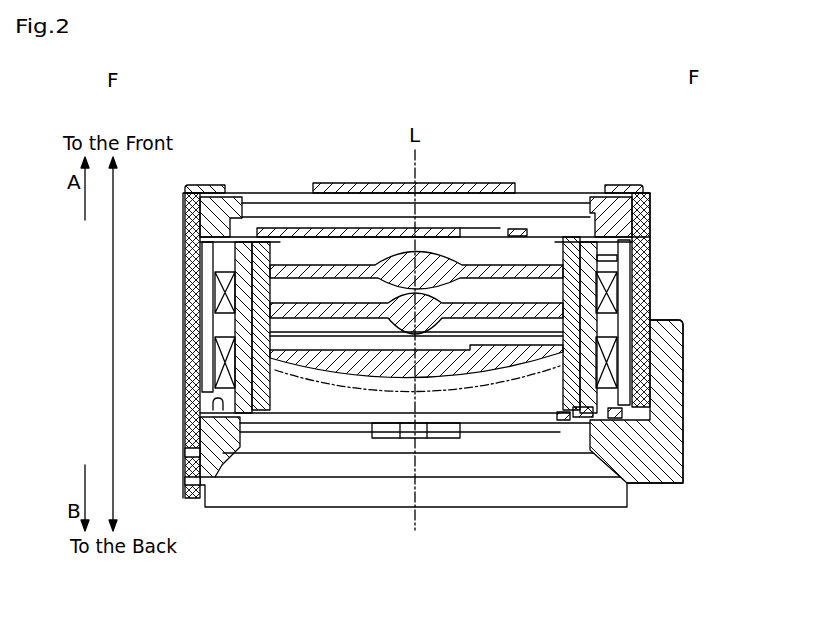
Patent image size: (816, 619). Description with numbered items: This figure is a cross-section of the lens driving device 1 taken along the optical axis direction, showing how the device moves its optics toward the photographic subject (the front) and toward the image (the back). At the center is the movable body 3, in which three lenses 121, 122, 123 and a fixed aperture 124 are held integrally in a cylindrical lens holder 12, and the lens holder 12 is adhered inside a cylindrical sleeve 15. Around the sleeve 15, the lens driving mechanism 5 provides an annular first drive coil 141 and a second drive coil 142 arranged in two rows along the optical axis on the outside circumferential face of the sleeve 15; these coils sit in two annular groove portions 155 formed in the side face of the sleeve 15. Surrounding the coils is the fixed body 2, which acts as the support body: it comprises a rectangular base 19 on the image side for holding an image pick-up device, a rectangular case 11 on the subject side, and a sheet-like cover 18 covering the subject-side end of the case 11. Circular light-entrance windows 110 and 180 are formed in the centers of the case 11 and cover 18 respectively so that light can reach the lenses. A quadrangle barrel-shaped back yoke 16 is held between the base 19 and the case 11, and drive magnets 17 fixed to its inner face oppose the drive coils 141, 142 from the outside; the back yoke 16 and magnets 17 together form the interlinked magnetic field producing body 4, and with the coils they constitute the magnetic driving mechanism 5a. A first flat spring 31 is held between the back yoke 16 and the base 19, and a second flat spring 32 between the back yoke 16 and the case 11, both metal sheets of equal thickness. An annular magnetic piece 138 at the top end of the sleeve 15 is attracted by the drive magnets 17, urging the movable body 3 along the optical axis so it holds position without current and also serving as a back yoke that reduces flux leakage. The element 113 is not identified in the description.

The lens driving device 1 is at (577, 90).
The fixed body 2 is at (141, 200).
The movable body 3 is at (602, 568).
The interlinked magnetic field producing body 4 is at (719, 283).
The lens driving mechanism 5 is at (771, 230).
The magnetic driving mechanism 5a is at (742, 253).
The case 11 is at (622, 186).
The lens holder 12 is at (575, 365).
The sleeve 15 is at (570, 418).
The back yoke 16 is at (192, 285).
The drive magnet 17 is at (654, 318).
The sheet-like cover 18 is at (185, 203).
The base 19 is at (189, 423).
The first flat spring 31 is at (628, 414).
The second flat spring 32 is at (650, 238).
The light-entrance window 110 is at (577, 198).
The top plate 113 is at (450, 186).
The lens 121 is at (380, 298).
The lens 122 is at (393, 332).
The lens 123 is at (445, 373).
The fixed aperture 124 is at (472, 337).
The magnetic piece 138 is at (236, 212).
The first drive coil 141 is at (618, 373).
The second drive coil 142 is at (617, 288).
The groove portion 155 is at (607, 259).
The light-entrance window 180 is at (530, 190).